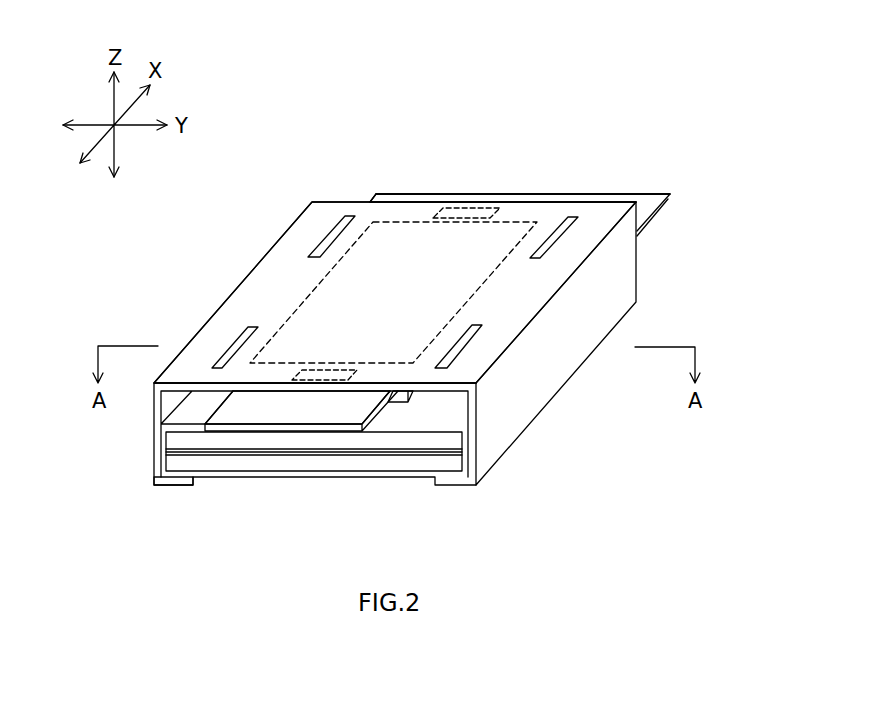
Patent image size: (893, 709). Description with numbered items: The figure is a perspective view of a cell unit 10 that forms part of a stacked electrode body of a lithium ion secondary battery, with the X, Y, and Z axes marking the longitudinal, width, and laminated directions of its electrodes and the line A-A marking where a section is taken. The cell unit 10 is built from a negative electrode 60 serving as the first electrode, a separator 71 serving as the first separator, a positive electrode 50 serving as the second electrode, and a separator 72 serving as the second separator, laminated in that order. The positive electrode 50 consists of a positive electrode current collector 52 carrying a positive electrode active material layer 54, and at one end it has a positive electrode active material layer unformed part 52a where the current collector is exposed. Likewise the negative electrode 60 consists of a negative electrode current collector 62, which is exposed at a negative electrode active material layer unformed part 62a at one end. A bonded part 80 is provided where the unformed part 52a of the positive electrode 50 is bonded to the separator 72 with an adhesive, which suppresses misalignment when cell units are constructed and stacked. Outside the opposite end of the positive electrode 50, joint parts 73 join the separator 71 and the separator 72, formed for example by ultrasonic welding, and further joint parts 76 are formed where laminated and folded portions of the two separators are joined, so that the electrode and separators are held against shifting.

The cell unit 10 is at (572, 85).
The positive electrode 50 is at (243, 442).
The positive electrode current collector 52 is at (367, 430).
The positive electrode active material layer unformed part 52a is at (300, 413).
The positive electrode active material layer 54 is at (468, 270).
The negative electrode 60 is at (417, 171).
The negative electrode current collector 62 is at (653, 193).
The negative electrode active material layer unformed part 62a is at (570, 200).
The separator 71 is at (175, 478).
The separator 72 is at (323, 212).
The joint part 73 is at (472, 210).
The joint part 76 is at (322, 242).
The bonded part 80 is at (335, 380).